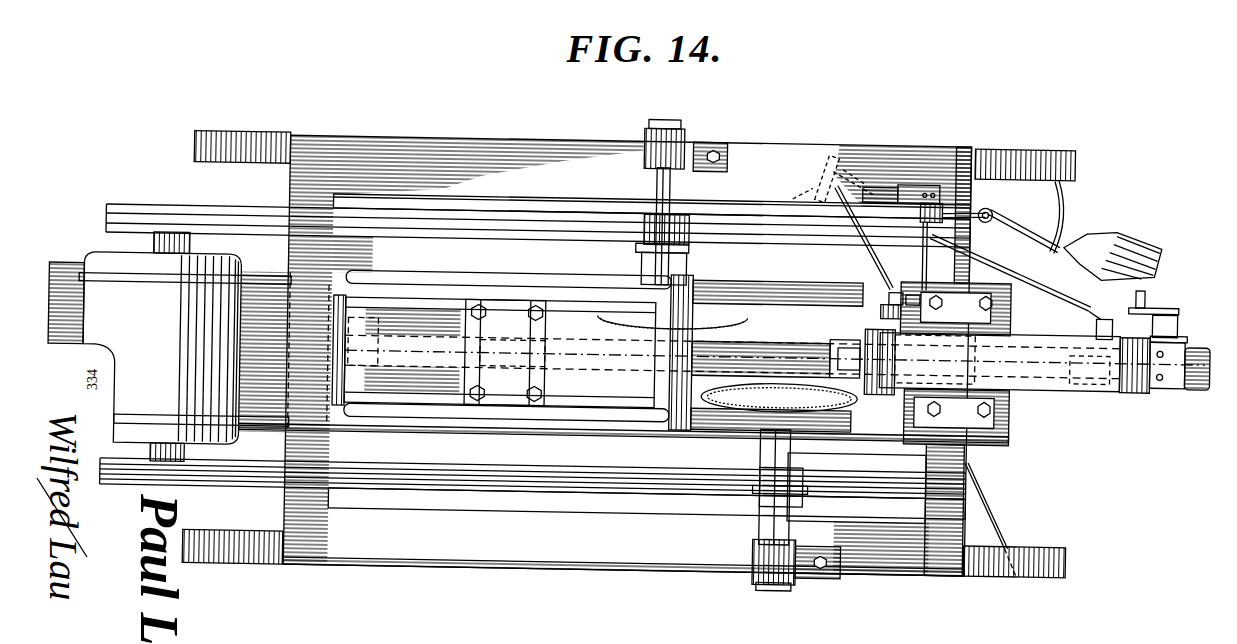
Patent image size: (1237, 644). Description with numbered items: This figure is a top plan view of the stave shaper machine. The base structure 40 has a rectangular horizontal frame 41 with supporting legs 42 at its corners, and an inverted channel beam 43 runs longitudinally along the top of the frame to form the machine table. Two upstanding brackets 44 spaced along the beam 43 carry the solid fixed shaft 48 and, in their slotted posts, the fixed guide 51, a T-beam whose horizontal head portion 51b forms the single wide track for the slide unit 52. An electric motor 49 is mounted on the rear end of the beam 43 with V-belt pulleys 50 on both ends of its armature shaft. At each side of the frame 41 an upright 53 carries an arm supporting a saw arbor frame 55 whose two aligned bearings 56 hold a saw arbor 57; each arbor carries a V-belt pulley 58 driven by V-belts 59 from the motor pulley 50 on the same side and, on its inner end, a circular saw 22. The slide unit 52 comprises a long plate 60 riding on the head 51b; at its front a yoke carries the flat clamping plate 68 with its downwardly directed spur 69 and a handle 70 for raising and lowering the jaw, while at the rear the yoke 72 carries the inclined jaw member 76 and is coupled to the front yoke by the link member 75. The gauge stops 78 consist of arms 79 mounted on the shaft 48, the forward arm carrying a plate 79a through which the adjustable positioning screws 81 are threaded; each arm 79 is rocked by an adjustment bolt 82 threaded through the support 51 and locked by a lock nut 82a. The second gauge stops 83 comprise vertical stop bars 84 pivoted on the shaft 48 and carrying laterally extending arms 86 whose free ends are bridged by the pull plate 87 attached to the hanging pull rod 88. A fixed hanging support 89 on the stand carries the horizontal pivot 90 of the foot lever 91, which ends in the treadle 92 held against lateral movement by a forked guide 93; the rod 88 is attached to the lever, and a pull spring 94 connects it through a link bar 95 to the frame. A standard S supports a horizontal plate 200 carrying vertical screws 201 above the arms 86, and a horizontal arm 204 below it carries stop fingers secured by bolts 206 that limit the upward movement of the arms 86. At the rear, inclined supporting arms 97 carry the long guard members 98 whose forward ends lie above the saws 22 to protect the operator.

The circular saw 22 is at (645, 340).
The base structure 40 is at (284, 528).
The horizontal frame 41 is at (915, 572).
The supporting legs 42 is at (246, 150).
The inverted channel beam 43 is at (1010, 433).
The upstanding brackets 44 is at (475, 318).
The solid fixed shaft 48 is at (740, 340).
The electric motor 49 is at (100, 268).
The V-belt pulleys 50 is at (178, 212).
The fixed guide and support 51 is at (445, 384).
The head portion of the T-beam 51b is at (410, 340).
The slide unit 52 is at (1044, 330).
The upright 53 is at (716, 148).
The saw arbor frame 55 is at (664, 120).
The bearings 56 is at (682, 138).
The saw arbor 57 is at (668, 198).
The V-belt pulley 58 is at (690, 250).
The V-belts 59 is at (484, 212).
The plate 60 is at (1036, 384).
The flat plate 68 is at (1135, 384).
The spur 69 is at (1150, 334).
The handle 70 is at (1197, 380).
The yoke 72 is at (832, 338).
The link member 75 is at (878, 390).
The jaw member 76 is at (855, 338).
The gauge stops 78 is at (876, 288).
The arms 79 is at (1187, 329).
The plate 79a is at (1160, 284).
The adjustable positioning screw 81 is at (893, 286).
The adjustment bolt 82 is at (880, 306).
The lock nut 82a is at (1178, 300).
The gauge stops 83 is at (920, 290).
The vertical stop bars 84 is at (1058, 320).
The laterally extending arms 86 is at (918, 232).
The pull plate 87 is at (916, 208).
The pull rod 88 is at (960, 212).
The fixed hanging support 89 is at (827, 179).
The horizontal pivot 90 is at (838, 148).
The foot lever 91 is at (1022, 222).
The treadle 92 is at (1128, 236).
The forked guide 93 is at (1066, 212).
The pull spring 94 is at (980, 202).
The link bar 95 is at (988, 208).
The supporting arms 97 is at (526, 280).
The guard members 98 is at (960, 280).
The horizontal plate 200 is at (937, 195).
The vertical screws 201 is at (932, 190).
The horizontal arm 204 is at (912, 180).
The bolt 206 is at (928, 188).
The standard S is at (890, 180).